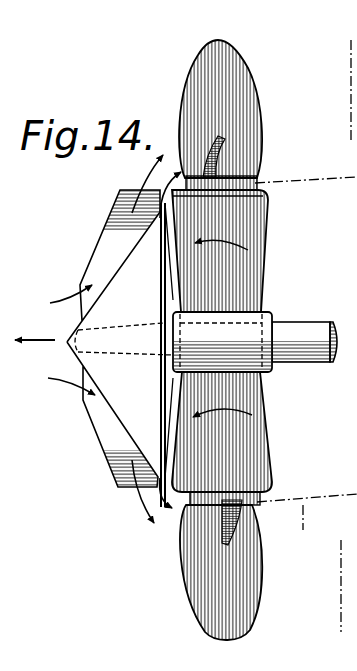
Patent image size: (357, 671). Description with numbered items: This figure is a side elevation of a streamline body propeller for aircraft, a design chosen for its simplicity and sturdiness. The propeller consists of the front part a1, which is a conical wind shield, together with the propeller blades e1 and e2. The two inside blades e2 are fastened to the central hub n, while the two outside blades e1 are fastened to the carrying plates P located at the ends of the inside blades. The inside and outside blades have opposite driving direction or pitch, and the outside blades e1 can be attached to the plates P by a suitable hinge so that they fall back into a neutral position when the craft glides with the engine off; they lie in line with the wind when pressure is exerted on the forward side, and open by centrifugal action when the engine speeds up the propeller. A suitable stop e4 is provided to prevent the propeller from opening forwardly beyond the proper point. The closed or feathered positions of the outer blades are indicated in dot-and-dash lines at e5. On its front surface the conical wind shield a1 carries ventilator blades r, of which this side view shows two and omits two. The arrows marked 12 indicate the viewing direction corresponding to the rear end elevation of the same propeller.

The outside propeller blade e1 is at (242, 104).
The inside propeller blade e2 is at (250, 230).
The stop e4 is at (215, 157).
The feathered position of outer blades e5 is at (306, 328).
The carrying plate P is at (268, 195).
The central hub n is at (242, 316).
The ventilator blade r is at (116, 339).
The front part a1 is at (104, 378).
The direction arrow 12 is at (316, 23).